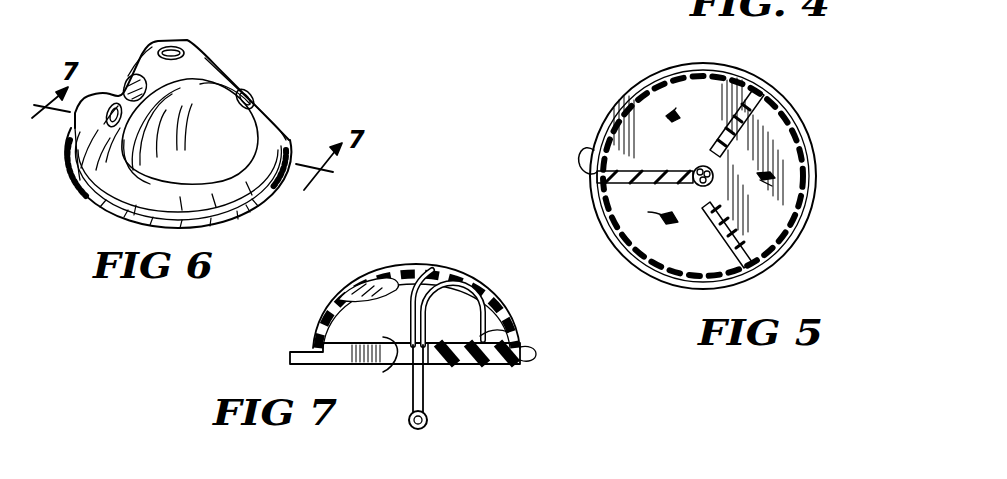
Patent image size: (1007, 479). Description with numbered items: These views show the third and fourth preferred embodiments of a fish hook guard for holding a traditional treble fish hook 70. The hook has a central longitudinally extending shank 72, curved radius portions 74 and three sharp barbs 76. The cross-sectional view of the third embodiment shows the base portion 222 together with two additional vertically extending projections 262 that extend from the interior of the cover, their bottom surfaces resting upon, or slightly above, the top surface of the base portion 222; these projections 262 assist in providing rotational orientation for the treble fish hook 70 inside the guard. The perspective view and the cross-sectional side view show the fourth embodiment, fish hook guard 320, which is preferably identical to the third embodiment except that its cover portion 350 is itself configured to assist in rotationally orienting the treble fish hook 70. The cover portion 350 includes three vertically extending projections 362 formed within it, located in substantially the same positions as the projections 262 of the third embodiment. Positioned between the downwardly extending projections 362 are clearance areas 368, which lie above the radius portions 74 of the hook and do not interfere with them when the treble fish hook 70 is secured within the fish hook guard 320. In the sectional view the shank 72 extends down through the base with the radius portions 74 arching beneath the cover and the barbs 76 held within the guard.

In FIG. 7, the treble fish hook 70 is at (458, 406).
In FIG. 7, the shank 72 is at (425, 382).
In FIG. 5, the shank 72 is at (701, 190).
In FIG. 7, the radius portions 74 is at (418, 268).
In FIG. 5, the radius portions 74 is at (706, 156).
In FIG. 7, the barbs 76 is at (494, 338).
In FIG. 5, the base portion 222 is at (800, 160).
In FIG. 5, the vertically extending projections 262 is at (740, 127).
In FIG. 6, the fish hook guard 320 is at (306, 124).
In FIG. 7, the fish hook guard 320 is at (548, 343).
In FIG. 6, the cover portion 350 is at (232, 48).
In FIG. 6, the vertically extending projections 362 is at (236, 140).
In FIG. 7, the vertically extending projections 362 is at (390, 286).
In FIG. 6, the clearance areas 368 is at (163, 41).
In FIG. 7, the clearance areas 368 is at (498, 310).